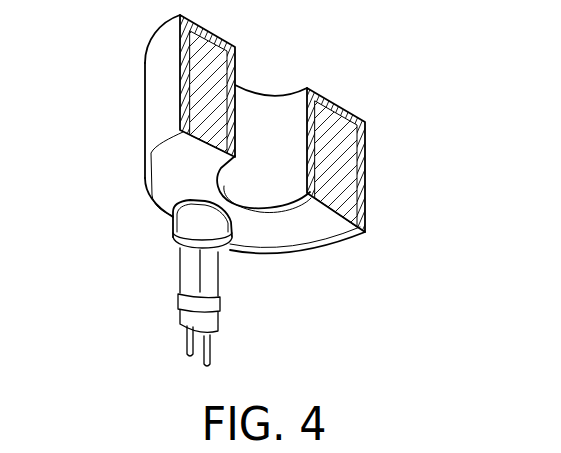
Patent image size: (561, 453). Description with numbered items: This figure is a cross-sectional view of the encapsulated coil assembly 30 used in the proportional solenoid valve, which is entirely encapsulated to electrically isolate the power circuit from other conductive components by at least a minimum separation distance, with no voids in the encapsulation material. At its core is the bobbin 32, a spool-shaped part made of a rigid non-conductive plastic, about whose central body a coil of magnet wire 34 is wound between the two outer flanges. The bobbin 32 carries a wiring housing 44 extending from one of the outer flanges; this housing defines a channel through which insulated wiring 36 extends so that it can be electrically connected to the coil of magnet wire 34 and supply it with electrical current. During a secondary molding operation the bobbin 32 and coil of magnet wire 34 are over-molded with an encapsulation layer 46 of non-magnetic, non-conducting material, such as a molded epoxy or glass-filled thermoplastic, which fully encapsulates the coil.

The encapsulated coil assembly 30 is at (403, 111).
The bobbin 32 is at (290, 230).
The coil of magnet wire 34 is at (335, 175).
The insulated wiring 36 is at (187, 315).
The wiring housing 44 is at (182, 227).
The encapsulation layer 46 is at (162, 97).